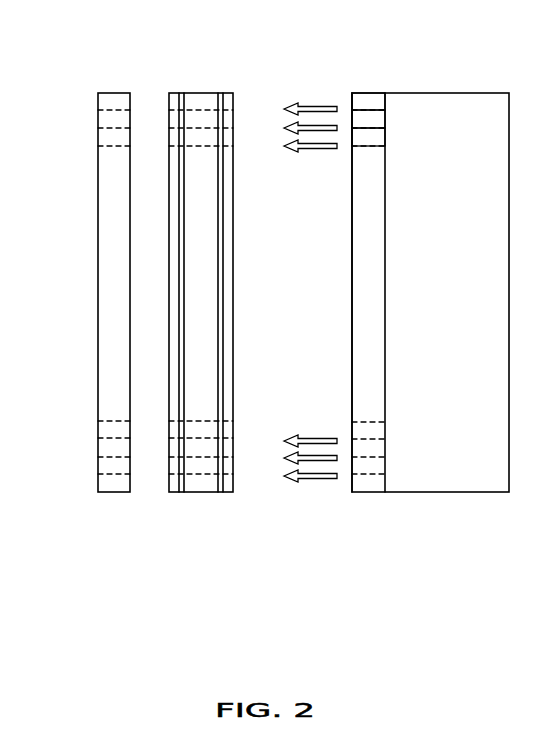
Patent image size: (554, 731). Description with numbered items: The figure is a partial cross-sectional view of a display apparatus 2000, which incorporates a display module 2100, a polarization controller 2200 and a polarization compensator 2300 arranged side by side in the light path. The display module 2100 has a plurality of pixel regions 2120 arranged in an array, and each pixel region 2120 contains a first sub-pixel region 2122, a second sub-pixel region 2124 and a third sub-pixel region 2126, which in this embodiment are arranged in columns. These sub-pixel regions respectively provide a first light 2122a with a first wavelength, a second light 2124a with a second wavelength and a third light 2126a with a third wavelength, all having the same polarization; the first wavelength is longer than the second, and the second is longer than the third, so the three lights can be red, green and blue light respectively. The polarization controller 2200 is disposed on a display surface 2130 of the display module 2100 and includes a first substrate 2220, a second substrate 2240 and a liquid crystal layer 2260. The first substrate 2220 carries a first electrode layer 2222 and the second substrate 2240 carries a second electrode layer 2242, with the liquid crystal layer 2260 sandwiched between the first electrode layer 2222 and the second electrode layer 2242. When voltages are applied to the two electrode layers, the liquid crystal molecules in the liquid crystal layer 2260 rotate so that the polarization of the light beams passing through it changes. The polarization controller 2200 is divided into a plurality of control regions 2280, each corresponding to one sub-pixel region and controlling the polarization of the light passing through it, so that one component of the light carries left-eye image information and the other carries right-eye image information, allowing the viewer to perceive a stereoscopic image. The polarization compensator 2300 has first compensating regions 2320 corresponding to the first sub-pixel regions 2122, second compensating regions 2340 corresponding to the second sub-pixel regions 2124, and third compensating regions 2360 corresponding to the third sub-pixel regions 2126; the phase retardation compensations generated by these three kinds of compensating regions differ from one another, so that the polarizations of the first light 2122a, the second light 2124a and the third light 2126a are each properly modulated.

The display apparatus 2000 is at (463, 593).
The display module 2100 is at (509, 508).
The pixel region 2120 is at (393, 95).
The first sub-pixel region 2122 is at (376, 100).
The first light 2122a is at (317, 107).
The second sub-pixel region 2124 is at (363, 118).
The second light 2124a is at (287, 127).
The third sub-pixel region 2126 is at (371, 146).
The third light 2126a is at (317, 149).
The display surface 2130 is at (350, 293).
The polarization controller 2200 is at (233, 537).
The first substrate 2220 is at (222, 493).
The first electrode layer 2222 is at (228, 493).
The second substrate 2240 is at (173, 493).
The second electrode layer 2242 is at (180, 493).
The liquid crystal layer 2260 is at (218, 497).
The control region 2280 is at (197, 105).
The polarization compensator 2300 is at (130, 497).
The first compensating region 2320 is at (110, 102).
The second compensating region 2340 is at (110, 122).
The third compensating region 2360 is at (110, 141).